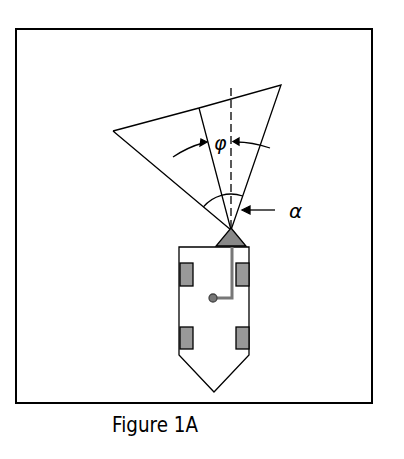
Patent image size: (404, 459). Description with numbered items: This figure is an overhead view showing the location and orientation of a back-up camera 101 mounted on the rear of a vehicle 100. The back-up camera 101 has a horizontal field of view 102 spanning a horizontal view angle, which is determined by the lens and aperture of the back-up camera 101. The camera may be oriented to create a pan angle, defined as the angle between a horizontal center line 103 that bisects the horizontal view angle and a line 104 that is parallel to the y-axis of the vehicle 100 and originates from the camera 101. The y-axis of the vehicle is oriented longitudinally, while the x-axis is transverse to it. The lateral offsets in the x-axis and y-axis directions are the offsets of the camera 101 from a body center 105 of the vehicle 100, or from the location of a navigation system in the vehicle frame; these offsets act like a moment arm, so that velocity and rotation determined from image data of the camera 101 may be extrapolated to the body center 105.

The vehicle 100 is at (179, 306).
The back-up camera 101 is at (227, 234).
The horizontal field of view 102 is at (127, 143).
The horizontal center line 103 is at (201, 122).
The line parallel to the y-axis 104 is at (232, 109).
The body center 105 is at (216, 304).